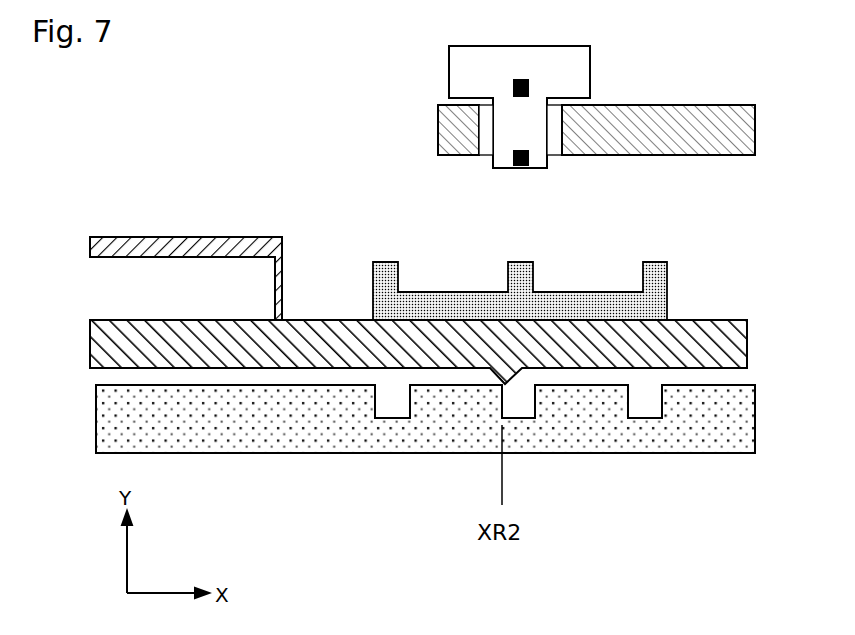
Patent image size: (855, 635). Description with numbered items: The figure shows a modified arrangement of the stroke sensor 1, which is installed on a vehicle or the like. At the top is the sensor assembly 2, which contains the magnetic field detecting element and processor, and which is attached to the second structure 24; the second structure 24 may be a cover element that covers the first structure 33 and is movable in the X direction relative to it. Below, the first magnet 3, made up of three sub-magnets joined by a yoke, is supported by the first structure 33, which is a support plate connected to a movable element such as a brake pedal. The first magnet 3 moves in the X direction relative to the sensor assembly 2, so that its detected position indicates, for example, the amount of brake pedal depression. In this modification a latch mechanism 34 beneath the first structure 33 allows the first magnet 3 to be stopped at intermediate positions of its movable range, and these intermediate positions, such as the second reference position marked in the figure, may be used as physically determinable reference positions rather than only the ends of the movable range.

The stroke sensor 1 is at (368, 164).
The sensor assembly 2 is at (436, 67).
The second structure 24 is at (683, 106).
The first magnet 3 is at (359, 278).
The first structure 33 is at (714, 320).
The latch mechanism 34 is at (590, 478).